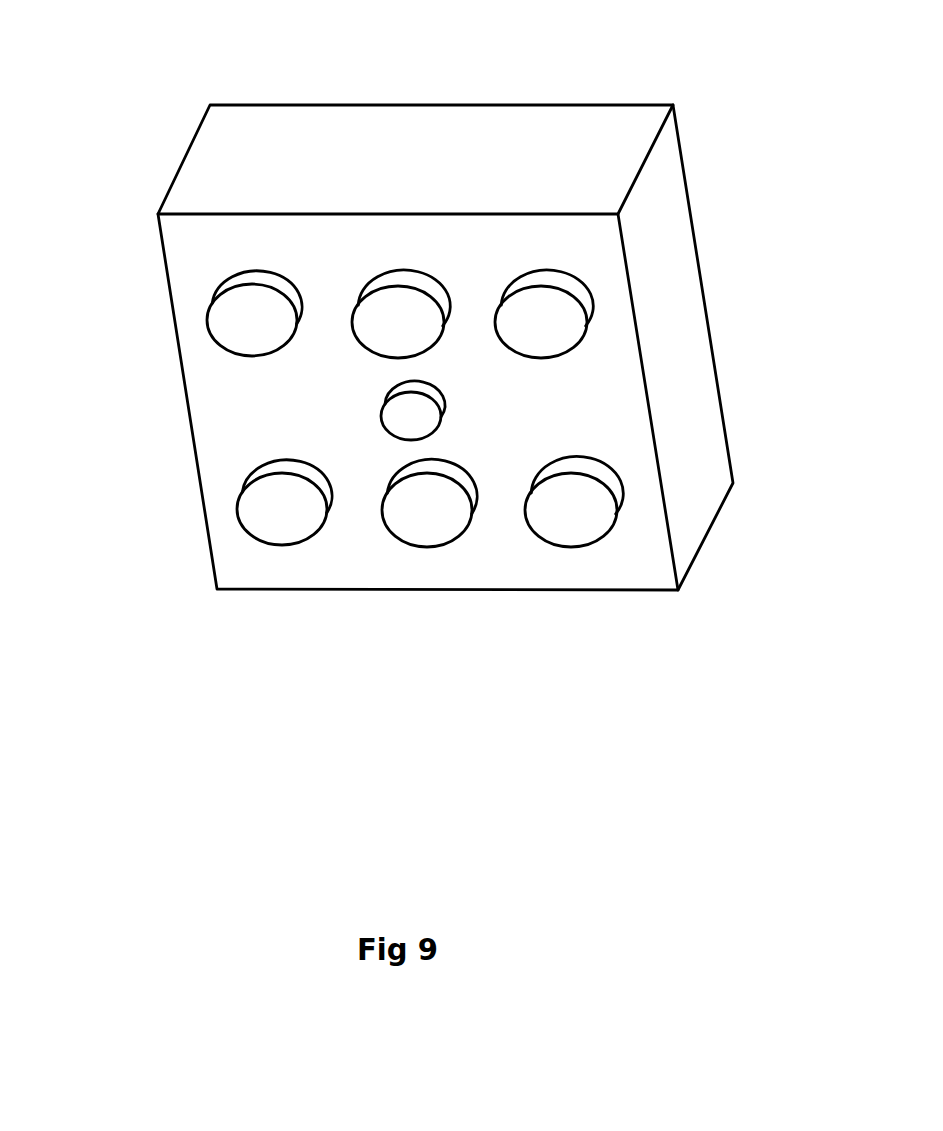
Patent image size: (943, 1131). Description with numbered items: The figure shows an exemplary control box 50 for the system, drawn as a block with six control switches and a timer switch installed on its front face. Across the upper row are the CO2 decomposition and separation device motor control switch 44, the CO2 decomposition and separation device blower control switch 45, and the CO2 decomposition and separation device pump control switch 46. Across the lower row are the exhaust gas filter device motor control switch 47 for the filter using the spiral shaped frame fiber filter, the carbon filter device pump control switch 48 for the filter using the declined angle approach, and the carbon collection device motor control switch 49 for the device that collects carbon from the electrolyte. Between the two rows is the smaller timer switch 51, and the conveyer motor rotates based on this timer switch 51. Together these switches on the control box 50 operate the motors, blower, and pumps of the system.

The CO2 decomposition and separation device motor control switch 44 is at (257, 320).
The CO2 decomposition and separation device blower control switch 45 is at (392, 310).
The CO2 decomposition and separation device pump control switch 46 is at (547, 317).
The exhaust gas filter device motor control switch 47 is at (289, 528).
The carbon filter device pump control switch 48 is at (439, 526).
The carbon collection device motor control switch 49 is at (569, 528).
The control box 50 is at (666, 384).
The timer switch 51 is at (402, 419).